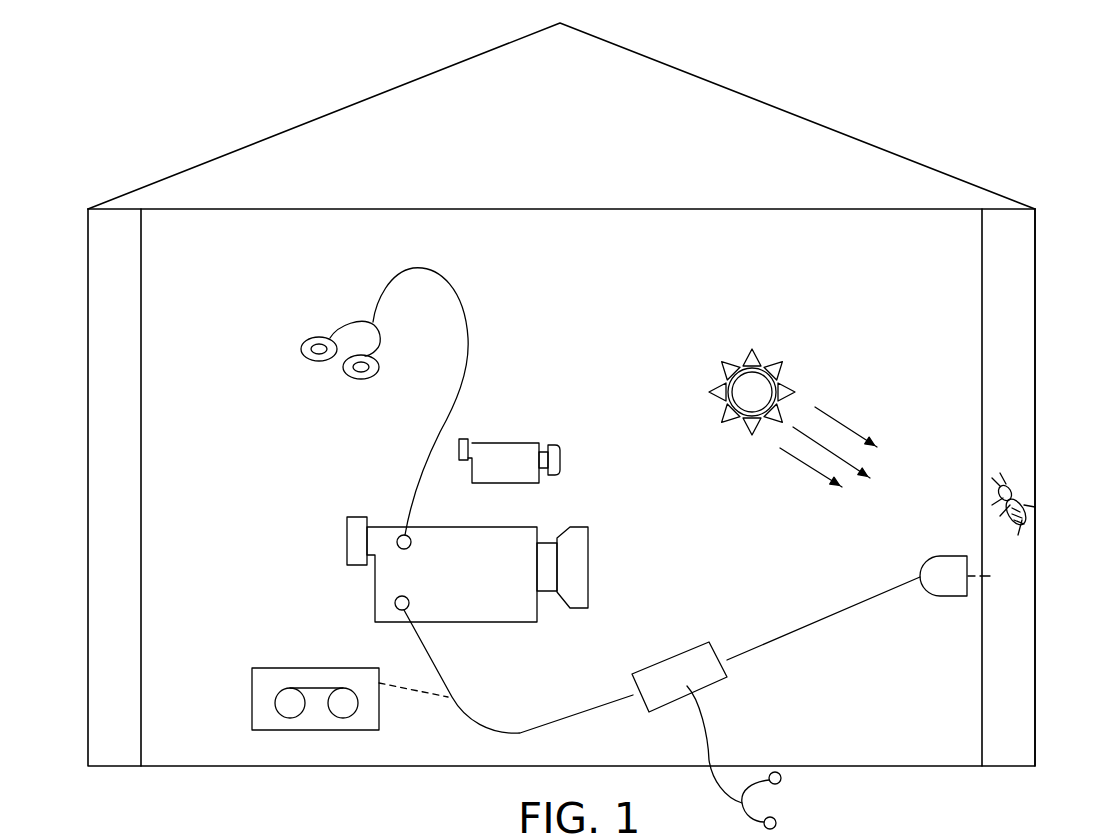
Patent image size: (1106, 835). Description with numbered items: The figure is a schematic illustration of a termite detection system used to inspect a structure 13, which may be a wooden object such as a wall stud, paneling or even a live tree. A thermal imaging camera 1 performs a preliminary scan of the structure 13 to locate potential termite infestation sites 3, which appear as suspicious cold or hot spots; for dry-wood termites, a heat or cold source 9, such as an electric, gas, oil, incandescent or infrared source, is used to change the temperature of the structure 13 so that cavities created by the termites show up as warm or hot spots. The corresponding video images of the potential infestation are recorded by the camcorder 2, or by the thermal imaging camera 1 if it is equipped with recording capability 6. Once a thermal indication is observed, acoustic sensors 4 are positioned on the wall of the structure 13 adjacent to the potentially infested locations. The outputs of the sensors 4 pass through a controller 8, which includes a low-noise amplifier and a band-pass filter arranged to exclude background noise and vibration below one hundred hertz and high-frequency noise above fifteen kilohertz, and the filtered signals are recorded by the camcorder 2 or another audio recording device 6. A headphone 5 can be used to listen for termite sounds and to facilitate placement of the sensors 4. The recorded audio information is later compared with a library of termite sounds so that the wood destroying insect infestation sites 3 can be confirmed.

The thermal imaging camera 1 is at (497, 443).
The camcorder 2 is at (586, 527).
The termite infestation sites 3 is at (1024, 500).
The acoustic sensors 4 is at (947, 596).
The headphone 5 is at (326, 328).
The audio recording device 6 is at (282, 668).
The controller 8 is at (677, 657).
The heat or cold source 9 is at (773, 357).
The structure 13 is at (1020, 325).